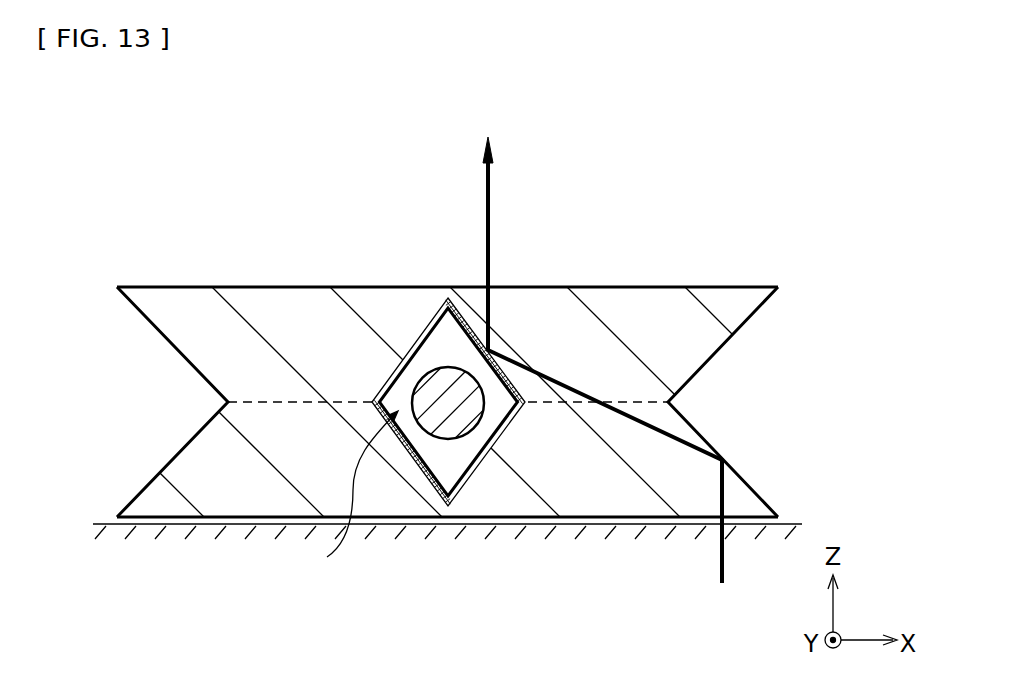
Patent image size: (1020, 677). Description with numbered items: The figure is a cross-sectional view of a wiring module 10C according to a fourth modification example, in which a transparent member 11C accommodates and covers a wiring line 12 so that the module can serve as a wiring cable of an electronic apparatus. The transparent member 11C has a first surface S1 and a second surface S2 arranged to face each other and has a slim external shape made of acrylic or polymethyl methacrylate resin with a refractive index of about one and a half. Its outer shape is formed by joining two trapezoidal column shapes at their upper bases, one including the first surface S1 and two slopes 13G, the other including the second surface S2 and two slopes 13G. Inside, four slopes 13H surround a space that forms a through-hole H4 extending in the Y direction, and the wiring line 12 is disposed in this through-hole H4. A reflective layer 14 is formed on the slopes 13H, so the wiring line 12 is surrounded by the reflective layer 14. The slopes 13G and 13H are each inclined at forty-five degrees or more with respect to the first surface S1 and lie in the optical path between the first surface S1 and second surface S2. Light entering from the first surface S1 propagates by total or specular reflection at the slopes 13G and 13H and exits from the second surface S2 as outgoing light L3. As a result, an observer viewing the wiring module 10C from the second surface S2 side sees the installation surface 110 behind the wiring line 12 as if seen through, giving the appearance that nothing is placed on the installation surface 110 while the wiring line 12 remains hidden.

The wiring module 10C is at (462, 395).
The transparent member 11C is at (682, 367).
The wiring line 12 is at (420, 432).
The slopes 13G is at (172, 347).
The slopes 13H is at (481, 455).
The reflective layer 14 is at (430, 313).
The first surface S1 is at (177, 524).
The second surface S2 is at (182, 287).
The through-hole H4 is at (354, 504).
The outgoing light L3 is at (594, 345).
The installation surface 110 is at (790, 522).